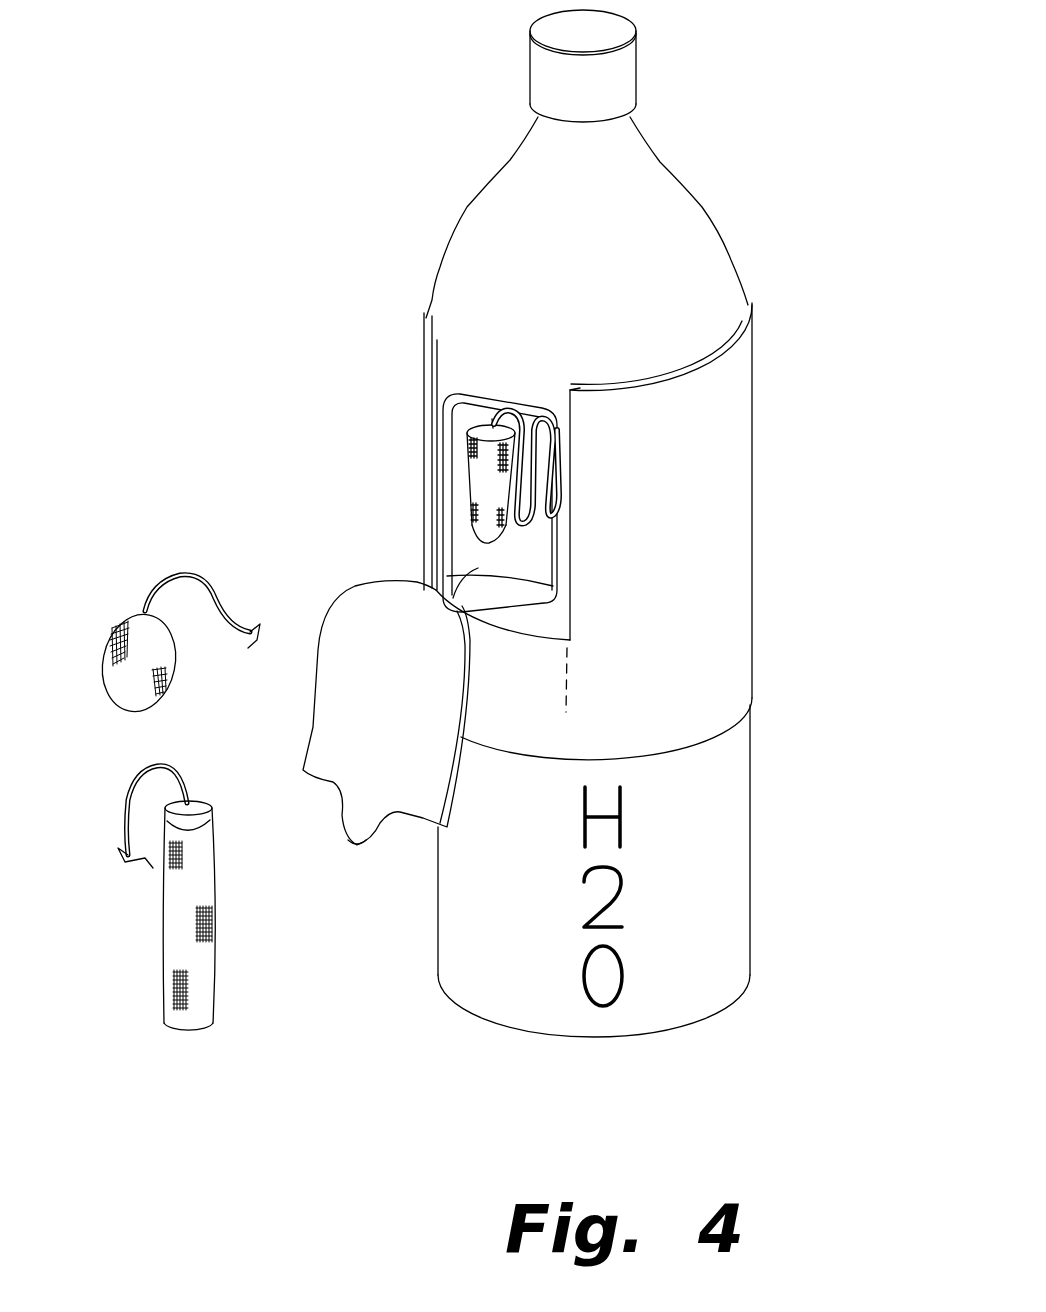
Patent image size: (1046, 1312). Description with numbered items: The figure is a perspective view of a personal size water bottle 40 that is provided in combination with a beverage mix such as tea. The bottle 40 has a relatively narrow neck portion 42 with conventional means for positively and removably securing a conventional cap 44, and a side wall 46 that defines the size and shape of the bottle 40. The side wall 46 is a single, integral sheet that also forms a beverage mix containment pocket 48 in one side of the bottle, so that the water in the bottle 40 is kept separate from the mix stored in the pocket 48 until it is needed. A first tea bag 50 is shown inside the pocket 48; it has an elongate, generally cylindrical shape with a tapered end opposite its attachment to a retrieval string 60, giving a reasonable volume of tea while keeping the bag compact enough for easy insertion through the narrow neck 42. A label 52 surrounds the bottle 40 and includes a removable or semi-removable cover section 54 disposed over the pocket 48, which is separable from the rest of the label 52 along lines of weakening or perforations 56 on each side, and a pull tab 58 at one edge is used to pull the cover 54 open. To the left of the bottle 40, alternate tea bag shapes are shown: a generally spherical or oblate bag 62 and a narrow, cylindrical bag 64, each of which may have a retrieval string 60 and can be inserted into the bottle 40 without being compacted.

The water bottle 40 is at (710, 1013).
The neck portion 42 is at (640, 112).
The cap 44 is at (530, 45).
The side wall 46 is at (700, 803).
The pocket 48 is at (555, 577).
The first tea bag 50 is at (463, 471).
The label 52 is at (714, 538).
The cover section 54 is at (400, 720).
The perforations 56 is at (563, 712).
The pull tab 58 is at (360, 848).
The retrieval string 60 is at (537, 420).
The spherical or oblate bag 62 is at (175, 677).
The narrow cylindrical bag 64 is at (165, 957).